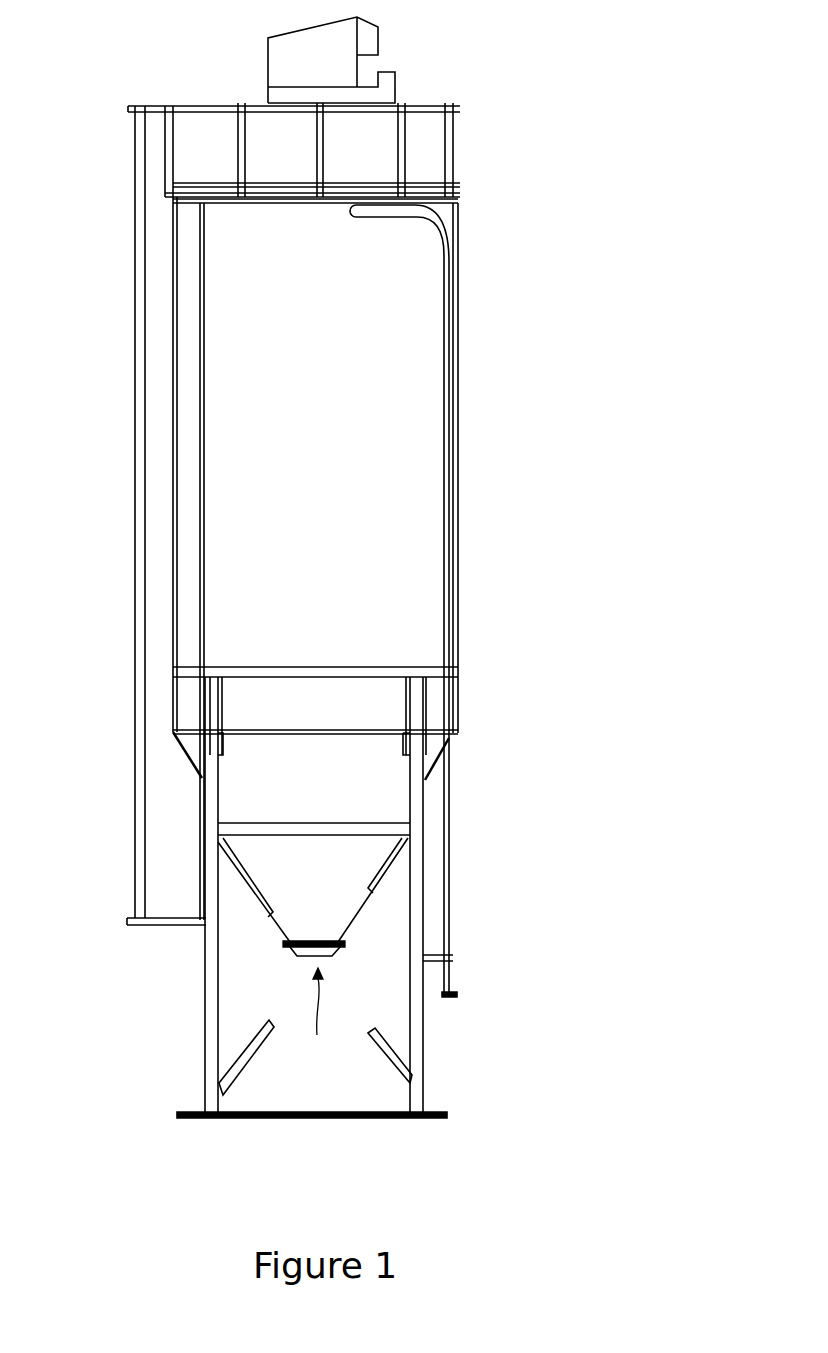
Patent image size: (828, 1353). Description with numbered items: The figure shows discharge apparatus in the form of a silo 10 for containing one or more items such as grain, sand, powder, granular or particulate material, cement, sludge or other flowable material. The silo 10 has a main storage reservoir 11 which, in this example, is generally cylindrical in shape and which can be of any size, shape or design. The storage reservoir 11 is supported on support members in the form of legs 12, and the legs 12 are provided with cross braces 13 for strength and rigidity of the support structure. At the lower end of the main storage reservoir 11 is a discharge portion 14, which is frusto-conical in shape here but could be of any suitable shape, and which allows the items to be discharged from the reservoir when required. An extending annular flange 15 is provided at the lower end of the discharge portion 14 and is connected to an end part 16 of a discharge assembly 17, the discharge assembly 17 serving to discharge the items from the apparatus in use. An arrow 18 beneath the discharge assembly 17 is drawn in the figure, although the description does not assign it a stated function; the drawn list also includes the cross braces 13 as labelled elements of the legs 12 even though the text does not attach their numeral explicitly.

The silo 10 is at (492, 537).
The main storage reservoir 11 is at (410, 454).
The legs 12 is at (418, 1033).
The diagonal braces 13 is at (368, 1090).
The discharge portion 14 is at (362, 898).
The extending annular flange 15 is at (342, 940).
The end part 16 is at (285, 951).
The discharge assembly 17 is at (333, 957).
The material flow direction 18 is at (318, 1021).